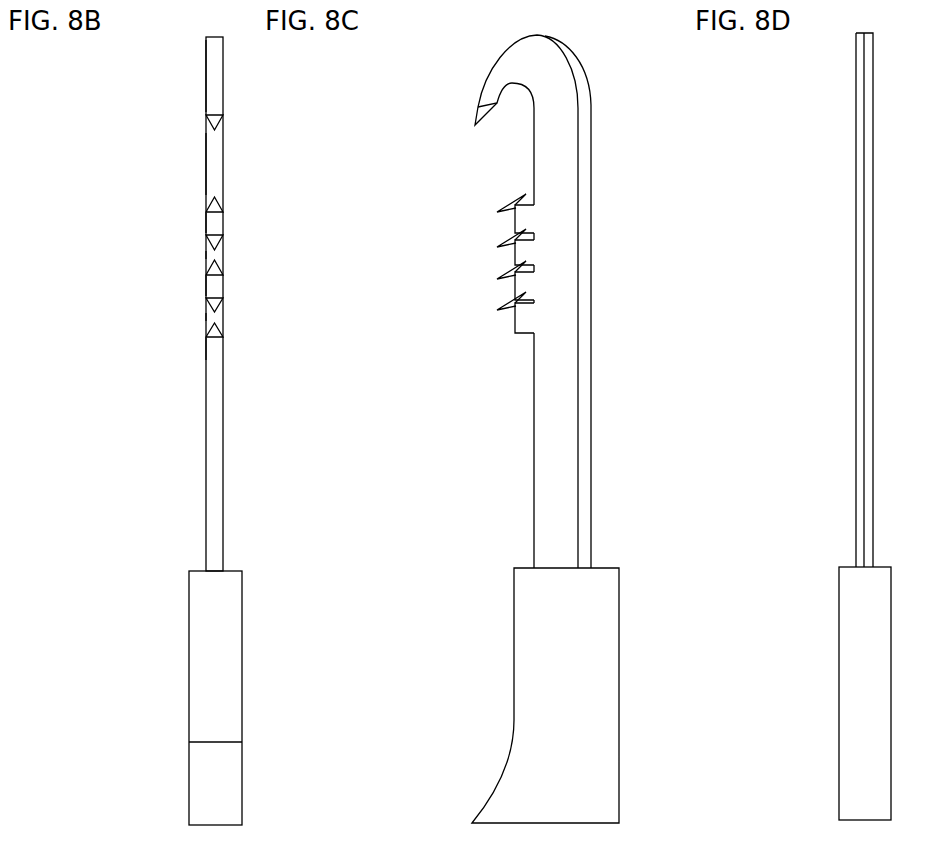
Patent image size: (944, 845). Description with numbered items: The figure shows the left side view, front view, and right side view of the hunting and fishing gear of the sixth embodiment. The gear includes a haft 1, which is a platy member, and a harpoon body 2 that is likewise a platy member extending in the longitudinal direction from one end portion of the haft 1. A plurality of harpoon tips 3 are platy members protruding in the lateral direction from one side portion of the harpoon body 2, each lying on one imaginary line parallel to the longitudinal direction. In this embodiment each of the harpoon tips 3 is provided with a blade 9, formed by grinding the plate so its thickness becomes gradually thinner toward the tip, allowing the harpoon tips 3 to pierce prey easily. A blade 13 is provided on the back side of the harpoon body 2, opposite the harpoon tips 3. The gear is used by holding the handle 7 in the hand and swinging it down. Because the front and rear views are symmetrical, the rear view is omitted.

In FIG. 8B, the haft 1 is at (228, 440).
In FIG. 8C, the haft 1 is at (570, 387).
In FIG. 8D, the haft 1 is at (851, 438).
In FIG. 8B, the harpoon body 2 is at (269, 304).
In FIG. 8C, the harpoon body 2 is at (601, 336).
In FIG. 8D, the harpoon body 2 is at (811, 300).
In FIG. 8B, the harpoon tips 3 is at (215, 83).
In FIG. 8C, the harpoon tips 3 is at (493, 83).
In FIG. 8B, the handle 7 is at (228, 630).
In FIG. 8C, the handle 7 is at (603, 603).
In FIG. 8D, the handle 7 is at (848, 695).
In FIG. 8B, the blades 9 is at (207, 121).
In FIG. 8C, the blades 9 is at (511, 200).
In FIG. 8C, the blade 13 is at (585, 153).
In FIG. 8D, the blade 13 is at (860, 167).